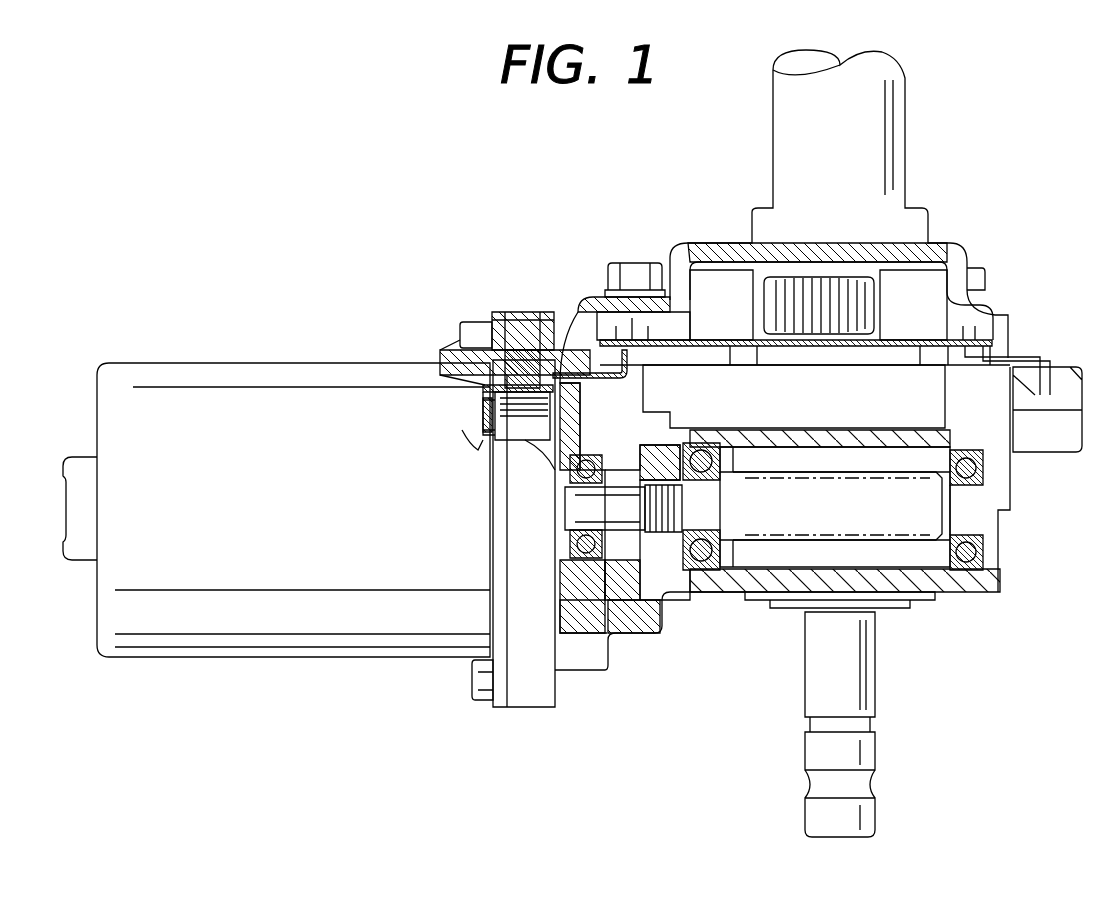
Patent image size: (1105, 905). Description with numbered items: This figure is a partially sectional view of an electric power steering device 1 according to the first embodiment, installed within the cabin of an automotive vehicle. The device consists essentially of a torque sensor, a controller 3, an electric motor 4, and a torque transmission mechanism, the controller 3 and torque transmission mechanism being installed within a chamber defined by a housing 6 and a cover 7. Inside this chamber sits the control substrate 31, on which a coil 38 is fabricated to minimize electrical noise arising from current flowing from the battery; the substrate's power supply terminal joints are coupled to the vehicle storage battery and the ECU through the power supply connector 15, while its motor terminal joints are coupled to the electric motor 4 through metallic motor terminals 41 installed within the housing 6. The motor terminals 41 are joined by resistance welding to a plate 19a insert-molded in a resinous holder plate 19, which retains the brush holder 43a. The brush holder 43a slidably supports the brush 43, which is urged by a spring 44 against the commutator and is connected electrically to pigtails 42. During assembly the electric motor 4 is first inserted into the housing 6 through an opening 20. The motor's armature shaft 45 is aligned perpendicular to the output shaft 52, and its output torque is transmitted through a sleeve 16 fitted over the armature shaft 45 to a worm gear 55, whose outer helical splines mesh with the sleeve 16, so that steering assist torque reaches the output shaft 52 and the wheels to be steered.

The electric power steering device 1 is at (290, 207).
The controller 3 is at (653, 338).
The electric motor 4 is at (228, 362).
The housing 6 is at (658, 605).
The cover 7 is at (958, 243).
The power supply connector 15 is at (1055, 450).
The sleeve 16 is at (623, 600).
The holder plate 19 is at (537, 312).
The plate 19a is at (548, 458).
The opening 20 is at (576, 370).
The control substrate 31 is at (940, 345).
The coil 38 is at (745, 285).
The motor terminals 41 is at (588, 300).
The pigtails 42 is at (488, 395).
The brush 43 is at (490, 345).
The brush holder 43a is at (478, 447).
The spring 44 is at (472, 330).
The armature shaft 45 is at (585, 508).
The output shaft 52 is at (815, 695).
The worm gear 55 is at (665, 525).